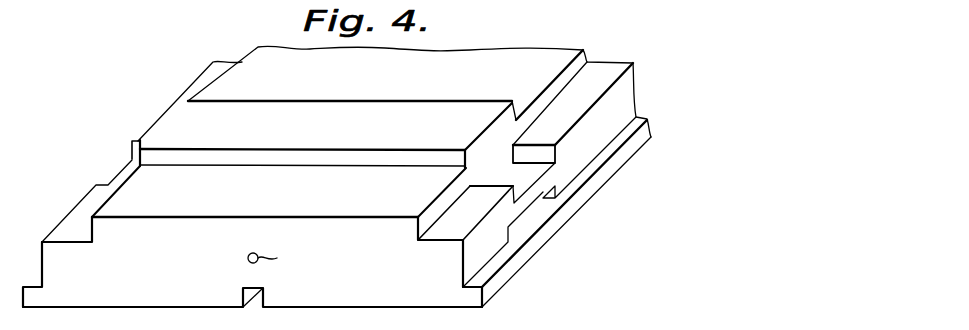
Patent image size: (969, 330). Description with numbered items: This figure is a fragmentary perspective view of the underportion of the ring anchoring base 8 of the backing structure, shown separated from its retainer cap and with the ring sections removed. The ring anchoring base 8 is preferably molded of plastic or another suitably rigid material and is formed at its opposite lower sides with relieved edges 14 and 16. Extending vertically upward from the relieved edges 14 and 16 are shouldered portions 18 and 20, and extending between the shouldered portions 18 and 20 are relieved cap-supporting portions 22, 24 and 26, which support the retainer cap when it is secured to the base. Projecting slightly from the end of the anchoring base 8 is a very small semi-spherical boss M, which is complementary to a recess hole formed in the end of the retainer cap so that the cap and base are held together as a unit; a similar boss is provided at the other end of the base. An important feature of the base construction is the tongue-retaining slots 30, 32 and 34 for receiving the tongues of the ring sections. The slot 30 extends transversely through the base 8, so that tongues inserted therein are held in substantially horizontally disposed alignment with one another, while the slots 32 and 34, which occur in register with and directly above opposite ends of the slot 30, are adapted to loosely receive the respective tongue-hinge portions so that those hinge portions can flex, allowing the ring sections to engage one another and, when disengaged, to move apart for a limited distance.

The ring anchoring base 8 is at (130, 294).
The relieved edge 14 is at (37, 270).
The shouldered portion 18 is at (70, 228).
The relieved cap-supporting portion 22 is at (279, 191).
The shouldered portion 20 is at (452, 233).
The relieved edge 16 is at (503, 270).
The tongue-retaining slot 30 is at (537, 224).
The relieved cap-supporting portion 24 is at (325, 114).
The tongue-retaining slot 34 is at (127, 152).
The relieved cap-supporting portion 26 is at (505, 57).
The tongue-retaining slot 32 is at (535, 149).
The semi-spherical boss M is at (277, 261).